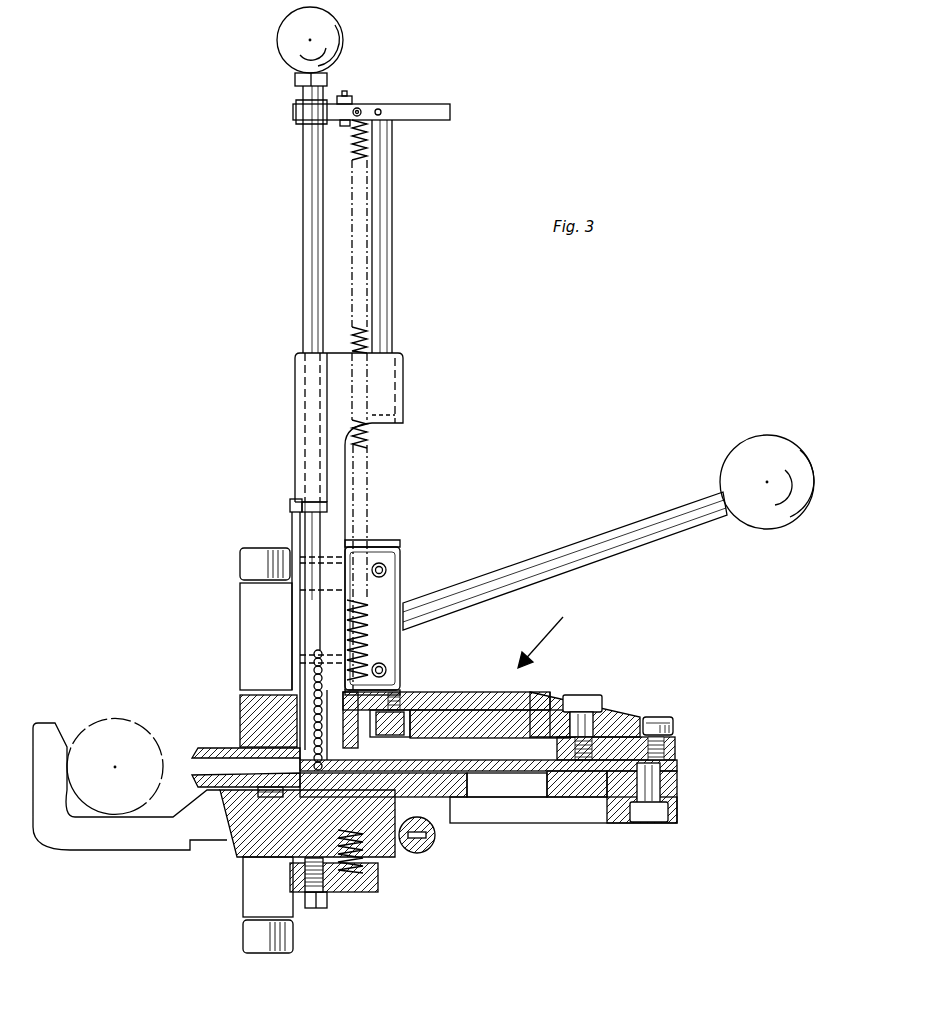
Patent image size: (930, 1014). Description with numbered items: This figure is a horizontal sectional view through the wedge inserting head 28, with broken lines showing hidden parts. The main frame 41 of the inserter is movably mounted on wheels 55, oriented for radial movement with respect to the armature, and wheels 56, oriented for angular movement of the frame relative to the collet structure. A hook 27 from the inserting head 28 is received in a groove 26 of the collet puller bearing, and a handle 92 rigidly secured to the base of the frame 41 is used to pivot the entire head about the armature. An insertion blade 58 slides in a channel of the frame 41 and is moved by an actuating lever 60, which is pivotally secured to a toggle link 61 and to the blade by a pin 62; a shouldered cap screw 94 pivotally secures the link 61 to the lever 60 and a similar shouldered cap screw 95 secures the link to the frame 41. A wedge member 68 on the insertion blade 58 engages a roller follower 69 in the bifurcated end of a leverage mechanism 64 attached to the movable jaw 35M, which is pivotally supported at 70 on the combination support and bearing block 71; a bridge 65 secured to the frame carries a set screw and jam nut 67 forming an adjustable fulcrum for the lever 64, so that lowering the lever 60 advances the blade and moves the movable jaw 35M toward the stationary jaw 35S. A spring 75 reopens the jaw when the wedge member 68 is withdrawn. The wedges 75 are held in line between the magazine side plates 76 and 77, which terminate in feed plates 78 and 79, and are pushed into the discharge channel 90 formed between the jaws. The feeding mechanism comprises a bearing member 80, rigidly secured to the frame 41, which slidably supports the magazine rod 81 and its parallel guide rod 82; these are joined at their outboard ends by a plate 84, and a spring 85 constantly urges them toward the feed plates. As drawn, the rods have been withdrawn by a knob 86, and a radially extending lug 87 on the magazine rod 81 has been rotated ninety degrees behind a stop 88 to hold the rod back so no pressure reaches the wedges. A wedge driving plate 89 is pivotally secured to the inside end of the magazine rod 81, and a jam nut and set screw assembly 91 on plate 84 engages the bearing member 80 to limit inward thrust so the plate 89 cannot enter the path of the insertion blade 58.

The knob 86 is at (282, 35).
The jam nut and set screw assembly 91 is at (346, 97).
The plate 84 is at (418, 104).
The spring 85 is at (366, 138).
The magazine rod 81 is at (305, 218).
The guide rod 82 is at (387, 236).
The bearing member 80 is at (296, 397).
The radially extending lug 87 is at (290, 505).
The stop 88 is at (293, 520).
The wedge driving plate 89 is at (318, 537).
The wheels 55 is at (245, 560).
The magazine side plate 77 is at (322, 603).
The magazine side plate 76 is at (316, 625).
The wedges 75 is at (314, 655).
The feed plate 78 is at (302, 700).
The handle 92 is at (660, 506).
The inserting head 28 is at (545, 633).
The groove 26 is at (100, 718).
The hook 27 is at (88, 845).
The stationary jaw 35S is at (212, 748).
The movable jaw 35M is at (195, 775).
The discharge channel 90 is at (253, 765).
The main frame 41 is at (455, 695).
The shouldered cap screw 95 is at (393, 710).
The toggle link 61 is at (552, 700).
The shouldered cap screw 94 is at (590, 697).
The wheels 56 is at (652, 718).
The actuating lever 60 is at (678, 750).
The feed plate 79 is at (370, 780).
The combination support and bearing block 71 is at (452, 790).
The insertion blade 58 is at (512, 778).
The pivot 70 is at (272, 790).
The wedge member 68 is at (548, 812).
The pin 62 is at (652, 822).
The leverage mechanism 64 is at (258, 840).
The roller follower 69 is at (428, 850).
The bridge 65 is at (372, 892).
The set screw and jam nut 67 is at (320, 895).